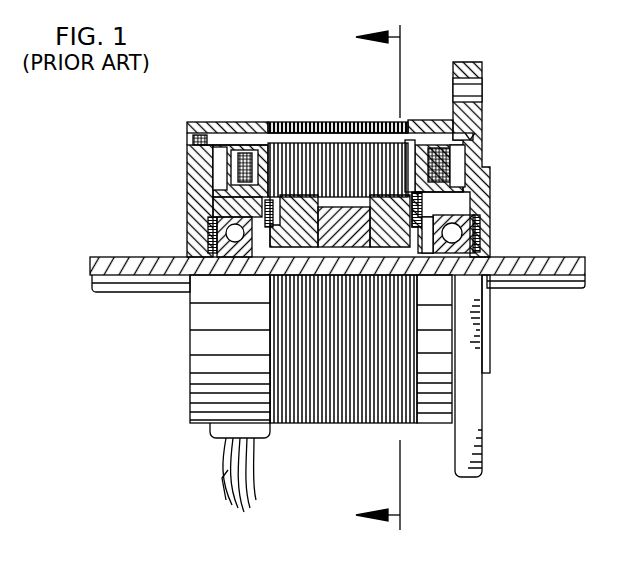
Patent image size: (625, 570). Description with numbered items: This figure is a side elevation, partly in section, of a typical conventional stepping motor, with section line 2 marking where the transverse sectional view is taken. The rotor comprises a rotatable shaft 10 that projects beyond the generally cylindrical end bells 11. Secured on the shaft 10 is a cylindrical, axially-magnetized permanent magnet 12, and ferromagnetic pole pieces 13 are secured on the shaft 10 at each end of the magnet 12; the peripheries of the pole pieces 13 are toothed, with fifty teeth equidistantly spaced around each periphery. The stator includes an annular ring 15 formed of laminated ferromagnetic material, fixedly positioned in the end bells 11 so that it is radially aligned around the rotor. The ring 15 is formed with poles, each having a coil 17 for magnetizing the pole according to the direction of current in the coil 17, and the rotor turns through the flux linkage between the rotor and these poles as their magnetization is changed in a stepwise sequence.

The section line 2- 2 is at (388, 277).
The rotatable shaft 10 is at (502, 265).
The end bells 11 is at (218, 362).
The permanent magnet 12 is at (343, 228).
The pole pieces 13 is at (287, 228).
The annular ring 15 is at (327, 160).
The coil 17 is at (210, 165).